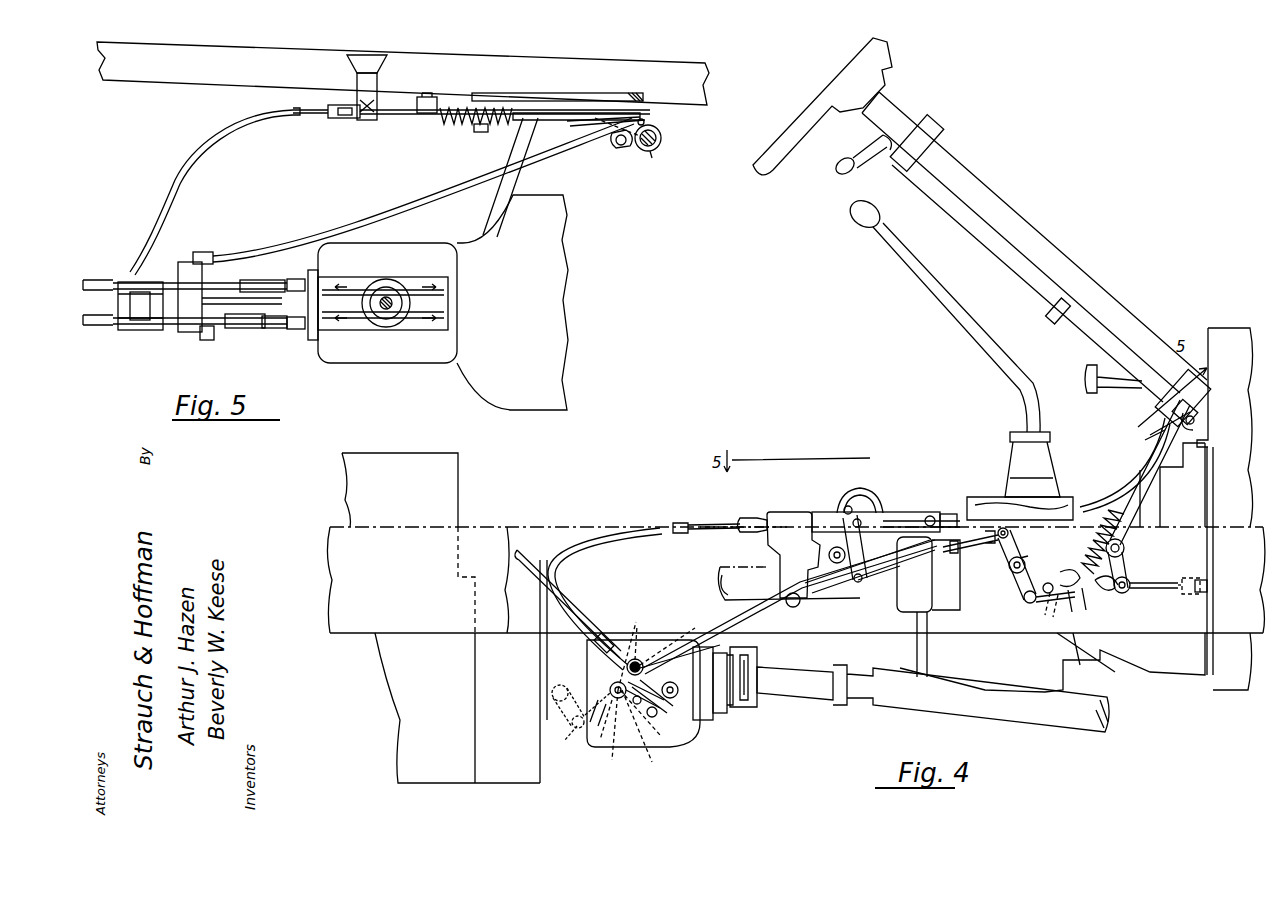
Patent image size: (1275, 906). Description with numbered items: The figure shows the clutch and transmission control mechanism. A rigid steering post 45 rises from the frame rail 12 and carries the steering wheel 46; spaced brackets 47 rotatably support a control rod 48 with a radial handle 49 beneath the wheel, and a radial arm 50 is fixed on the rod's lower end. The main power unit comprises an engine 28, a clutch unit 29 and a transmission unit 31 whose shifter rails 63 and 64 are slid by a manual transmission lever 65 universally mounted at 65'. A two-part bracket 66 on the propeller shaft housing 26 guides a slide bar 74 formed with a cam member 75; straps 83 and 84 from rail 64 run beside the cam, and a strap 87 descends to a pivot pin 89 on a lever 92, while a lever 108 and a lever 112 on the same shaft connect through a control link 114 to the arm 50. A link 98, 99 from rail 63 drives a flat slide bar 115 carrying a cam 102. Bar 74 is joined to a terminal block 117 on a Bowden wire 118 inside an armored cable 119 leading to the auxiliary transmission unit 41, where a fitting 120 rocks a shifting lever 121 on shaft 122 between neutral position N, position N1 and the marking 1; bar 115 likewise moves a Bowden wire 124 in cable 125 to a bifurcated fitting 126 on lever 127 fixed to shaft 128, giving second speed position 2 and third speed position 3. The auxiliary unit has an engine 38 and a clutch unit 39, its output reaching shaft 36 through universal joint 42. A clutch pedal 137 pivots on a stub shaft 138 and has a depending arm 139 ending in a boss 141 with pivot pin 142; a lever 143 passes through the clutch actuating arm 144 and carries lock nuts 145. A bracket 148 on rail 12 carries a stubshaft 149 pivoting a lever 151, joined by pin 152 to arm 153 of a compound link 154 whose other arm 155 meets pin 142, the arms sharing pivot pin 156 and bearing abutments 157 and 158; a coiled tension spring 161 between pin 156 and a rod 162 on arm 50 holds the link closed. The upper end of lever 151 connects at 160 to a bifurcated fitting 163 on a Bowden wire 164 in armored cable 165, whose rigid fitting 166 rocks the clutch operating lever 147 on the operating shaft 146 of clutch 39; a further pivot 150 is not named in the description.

In FIG. 5, the frame rail 12 is at (668, 66).
In FIG. 4, the propeller shaft housing 26 is at (852, 596).
In FIG. 4, the engine 28 is at (1228, 338).
In FIG. 5, the clutch unit 29 is at (498, 385).
In FIG. 4, the clutch unit 29 is at (1185, 508).
In FIG. 5, the transmission unit 31 is at (412, 360).
In FIG. 4, the transmission unit 31 is at (1022, 654).
In FIG. 4, the shaft 36 is at (985, 708).
In FIG. 4, the engine 38 is at (447, 770).
In FIG. 4, the clutch unit 39 is at (520, 778).
In FIG. 4, the transmission unit 41 is at (665, 744).
In FIG. 4, the universal joint 42 is at (757, 698).
In FIG. 5, the steering post 45 is at (659, 160).
In FIG. 4, the steering post 45 is at (1058, 250).
In FIG. 4, the steering wheel 46 is at (770, 165).
In FIG. 5, the brackets 47 is at (662, 137).
In FIG. 4, the brackets 47 is at (925, 133).
In FIG. 5, the control rod 48 is at (615, 148).
In FIG. 4, the control rod 48 is at (1050, 306).
In FIG. 4, the radial handle 49 is at (866, 152).
In FIG. 5, the radial arm 50 is at (646, 121).
In FIG. 4, the radial arm 50 is at (1198, 424).
In FIG. 5, the shifter rail 63 is at (298, 279).
In FIG. 5, the shifter rail 64 is at (298, 330).
In FIG. 5, the manual transmission lever 65 is at (386, 289).
In FIG. 4, the manual transmission lever 65 is at (942, 313).
In FIG. 4, the universal mounting 65' is at (1015, 464).
In FIG. 5, the two-part bracket 66 is at (148, 341).
In FIG. 4, the two-part bracket 66 is at (765, 554).
In FIG. 5, the slide bar 74 is at (112, 327).
In FIG. 4, the slide bar 74 is at (820, 520).
In FIG. 5, the cam member 75 is at (236, 328).
In FIG. 4, the cam member 75 is at (880, 498).
In FIG. 5, the strap 83 is at (270, 314).
In FIG. 5, the strap 84 is at (258, 328).
In FIG. 4, the strap 84 is at (910, 528).
In FIG. 4, the strap 87 is at (862, 548).
In FIG. 4, the pivot pin 89 is at (880, 575).
In FIG. 5, the lever 92 is at (205, 340).
In FIG. 4, the lever 92 is at (852, 582).
In FIG. 5, the link 98 is at (263, 280).
In FIG. 5, the link 99 is at (240, 300).
In FIG. 5, the cam 102 is at (221, 283).
In FIG. 5, the lever 108 is at (178, 275).
In FIG. 5, the lever 112 is at (194, 255).
In FIG. 4, the lever 112 is at (827, 557).
In FIG. 5, the control link 114 is at (598, 125).
In FIG. 4, the control link 114 is at (958, 505).
In FIG. 5, the flat slide bar 115 is at (115, 282).
In FIG. 4, the terminal block 117 is at (727, 508).
In FIG. 4, the Bowden wire 118 is at (693, 528).
In FIG. 4, the armored cable 119 is at (655, 535).
In FIG. 4, the fitting 120 is at (679, 683).
In FIG. 4, the transmission shifting lever 121 is at (655, 717).
In FIG. 4, the shaft 122 is at (711, 684).
In FIG. 4, the Bowden wire 124 is at (612, 632).
In FIG. 4, the armored cable 125 is at (555, 540).
In FIG. 4, the bifurcated fitting 126 is at (646, 641).
In FIG. 4, the transmission operating lever 127 is at (637, 663).
In FIG. 4, the shaft 128 is at (637, 702).
In FIG. 5, the clutch pedal 137 is at (536, 93).
In FIG. 4, the clutch pedal 137 is at (1105, 385).
In FIG. 5, the stub shaft 138 is at (481, 133).
In FIG. 4, the stub shaft 138 is at (1128, 540).
In FIG. 4, the depending arm 139 is at (1125, 550).
In FIG. 4, the apertured boss 141 is at (1128, 595).
In FIG. 4, the pivot pin 142 is at (1112, 590).
In FIG. 4, the lever 143 is at (1170, 590).
In FIG. 5, the clutch actuating arm 144 is at (498, 190).
In FIG. 4, the clutch actuating arm 144 is at (1203, 577).
In FIG. 4, the lock nuts 145 is at (1205, 598).
In FIG. 4, the operating shaft 146 is at (560, 685).
In FIG. 4, the clutch operating lever 147 is at (552, 703).
In FIG. 5, the bracket 148 is at (355, 96).
In FIG. 4, the stubshaft 149 is at (1022, 560).
In FIG. 4, the pivot 150 is at (1126, 584).
In FIG. 5, the lever 151 is at (356, 119).
In FIG. 4, the lever 151 is at (1010, 575).
In FIG. 4, the pivot pin 152 is at (1024, 598).
In FIG. 4, the arm 153 is at (1042, 605).
In FIG. 5, the compound link 154 is at (407, 126).
In FIG. 4, the compound link 154 is at (1027, 566).
In FIG. 4, the arm 155 is at (1070, 570).
In FIG. 5, the common pivot pin 156 is at (425, 95).
In FIG. 4, the common pivot pin 156 is at (1053, 587).
In FIG. 4, the abutment 157 is at (1050, 620).
In FIG. 4, the abutment 158 is at (1078, 613).
In FIG. 4, the pivotal connection 160 is at (1010, 534).
In FIG. 5, the coiled tension spring 161 is at (452, 128).
In FIG. 4, the coiled tension spring 161 is at (1098, 506).
In FIG. 5, the rod 162 is at (580, 118).
In FIG. 4, the rod 162 is at (1140, 462).
In FIG. 4, the bifurcated fitting 163 is at (988, 545).
In FIG. 4, the Bowden wire 164 is at (965, 556).
In FIG. 4, the armored cable 165 is at (788, 606).
In FIG. 4, the rigid fitting 166 is at (600, 720).
In FIG. 4, the gear position 1 is at (592, 745).
In FIG. 4, the second speed position 2 is at (683, 654).
In FIG. 4, the third speed position 3 is at (628, 648).
In FIG. 4, the neutral position N is at (649, 693).
In FIG. 4, the second neutral position N1 is at (641, 734).